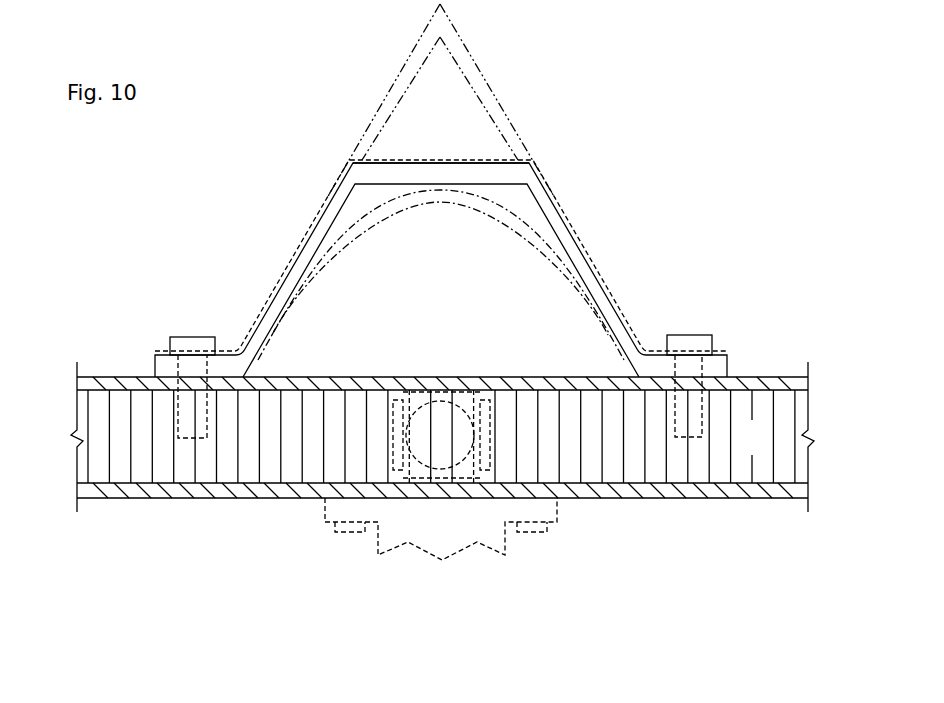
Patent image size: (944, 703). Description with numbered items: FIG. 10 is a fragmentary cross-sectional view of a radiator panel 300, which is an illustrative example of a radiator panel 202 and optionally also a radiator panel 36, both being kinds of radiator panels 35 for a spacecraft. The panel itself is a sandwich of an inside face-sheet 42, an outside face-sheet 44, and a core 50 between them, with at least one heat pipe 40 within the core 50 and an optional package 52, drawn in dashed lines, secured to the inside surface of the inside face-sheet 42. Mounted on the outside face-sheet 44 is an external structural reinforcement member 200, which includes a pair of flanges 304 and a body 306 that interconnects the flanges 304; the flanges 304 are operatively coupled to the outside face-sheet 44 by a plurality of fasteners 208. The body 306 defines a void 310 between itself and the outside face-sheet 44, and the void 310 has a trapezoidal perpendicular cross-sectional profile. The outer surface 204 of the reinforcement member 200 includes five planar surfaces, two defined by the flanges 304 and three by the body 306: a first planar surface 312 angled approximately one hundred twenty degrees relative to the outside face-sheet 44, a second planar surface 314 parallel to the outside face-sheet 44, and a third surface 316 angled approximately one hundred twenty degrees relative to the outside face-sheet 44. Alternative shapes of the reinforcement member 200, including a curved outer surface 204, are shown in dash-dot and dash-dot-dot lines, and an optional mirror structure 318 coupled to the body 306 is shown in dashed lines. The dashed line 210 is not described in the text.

The radiator panel 35 is at (127, 152).
The radiator panel 36 is at (117, 244).
The heat pipe 40 is at (490, 410).
The inside face-sheet 42 is at (643, 499).
The outside face-sheet 44 is at (772, 377).
The core 50 is at (766, 449).
The package 52 is at (375, 545).
The external structural reinforcement member 200 is at (451, 100).
The radiator panel 202 is at (137, 209).
The outer surface 204 is at (474, 155).
The fastener 208 is at (195, 337).
The outer ply 210 is at (545, 177).
The radiator panel 300 is at (442, 219).
The flange 304 is at (218, 0).
The body 306 is at (464, 143).
The void 310 is at (457, 314).
The first planar surface 312 is at (300, 252).
The second planar surface 314 is at (404, 161).
The third surface 316 is at (581, 249).
The mirror structure 318 is at (432, 158).